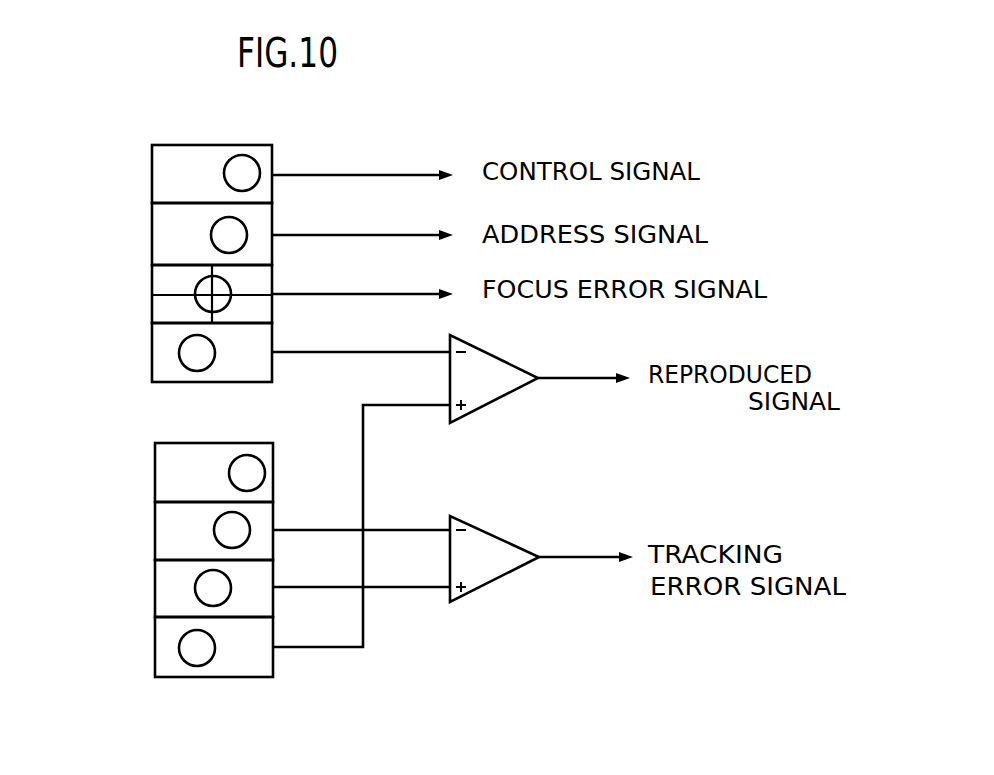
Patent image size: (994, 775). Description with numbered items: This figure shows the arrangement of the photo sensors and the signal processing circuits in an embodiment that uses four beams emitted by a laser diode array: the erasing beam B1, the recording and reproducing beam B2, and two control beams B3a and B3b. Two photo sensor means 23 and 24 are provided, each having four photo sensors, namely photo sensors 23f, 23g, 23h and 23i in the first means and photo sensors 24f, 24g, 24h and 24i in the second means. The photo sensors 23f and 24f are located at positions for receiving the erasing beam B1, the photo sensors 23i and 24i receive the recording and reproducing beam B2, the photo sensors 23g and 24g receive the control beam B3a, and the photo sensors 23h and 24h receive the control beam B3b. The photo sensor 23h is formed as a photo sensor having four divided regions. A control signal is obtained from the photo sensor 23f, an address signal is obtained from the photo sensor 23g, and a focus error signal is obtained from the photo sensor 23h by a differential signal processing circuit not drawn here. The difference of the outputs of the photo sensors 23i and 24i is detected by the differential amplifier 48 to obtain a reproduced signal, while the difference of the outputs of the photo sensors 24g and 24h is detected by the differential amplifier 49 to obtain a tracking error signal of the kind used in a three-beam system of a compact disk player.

The photo sensor means 23 is at (78, 152).
The photo sensor 23f is at (157, 174).
The photo sensor 23g is at (159, 238).
The photo sensor 23h is at (160, 291).
The photo sensor 23i is at (160, 351).
The photo sensor means 24 is at (78, 673).
The photo sensor 24f is at (159, 470).
The photo sensor 24g is at (162, 535).
The photo sensor 24h is at (164, 582).
The photo sensor 24i is at (164, 642).
The differential amplifier 48 is at (515, 370).
The differential amplifier 49 is at (513, 558).
The erasing beam B1 is at (257, 169).
The recording and reproducing beam B2 is at (197, 371).
The control beam B3a is at (244, 233).
The control beam B3b is at (230, 290).